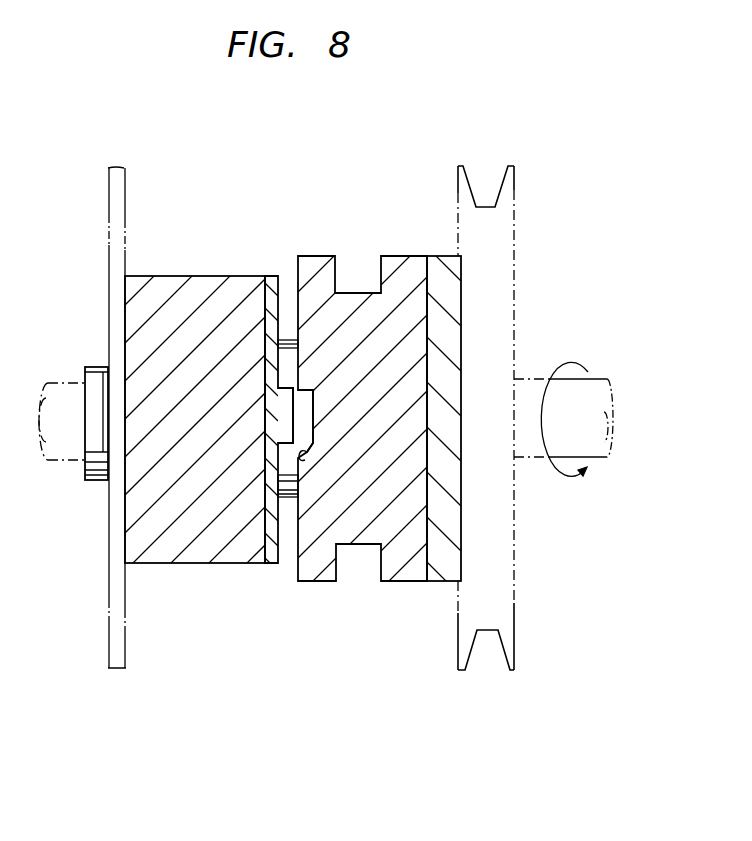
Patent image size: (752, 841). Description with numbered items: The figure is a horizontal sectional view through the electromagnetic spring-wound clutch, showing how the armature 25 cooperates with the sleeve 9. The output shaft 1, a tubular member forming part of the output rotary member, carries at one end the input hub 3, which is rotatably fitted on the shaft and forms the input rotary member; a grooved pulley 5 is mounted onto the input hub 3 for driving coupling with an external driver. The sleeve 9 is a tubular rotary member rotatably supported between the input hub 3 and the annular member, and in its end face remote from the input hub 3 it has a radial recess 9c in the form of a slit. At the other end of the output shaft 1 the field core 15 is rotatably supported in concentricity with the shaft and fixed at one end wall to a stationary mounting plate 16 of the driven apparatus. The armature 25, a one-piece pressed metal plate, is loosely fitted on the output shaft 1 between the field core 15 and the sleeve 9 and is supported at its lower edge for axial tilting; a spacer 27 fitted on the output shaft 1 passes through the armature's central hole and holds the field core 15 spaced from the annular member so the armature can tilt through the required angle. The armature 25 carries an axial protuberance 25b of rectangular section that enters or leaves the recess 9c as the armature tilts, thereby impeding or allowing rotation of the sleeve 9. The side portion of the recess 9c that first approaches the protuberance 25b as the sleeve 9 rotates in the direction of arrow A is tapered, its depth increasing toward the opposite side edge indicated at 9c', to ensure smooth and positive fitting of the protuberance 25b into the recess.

The output shaft 1 is at (97, 481).
The input hub 3 is at (442, 581).
The grooved pulley 5 is at (458, 649).
The sleeve 9 is at (365, 580).
The radial recess 9c is at (333, 421).
The hook portion of lug 9c' is at (336, 466).
The field core 15 is at (219, 565).
The stationary mounting plate 16 is at (125, 635).
The armature 25 is at (273, 277).
The axial protuberance 25b is at (286, 426).
The spacer 27 is at (290, 499).
The direction of rotation of the sleeve A is at (572, 423).